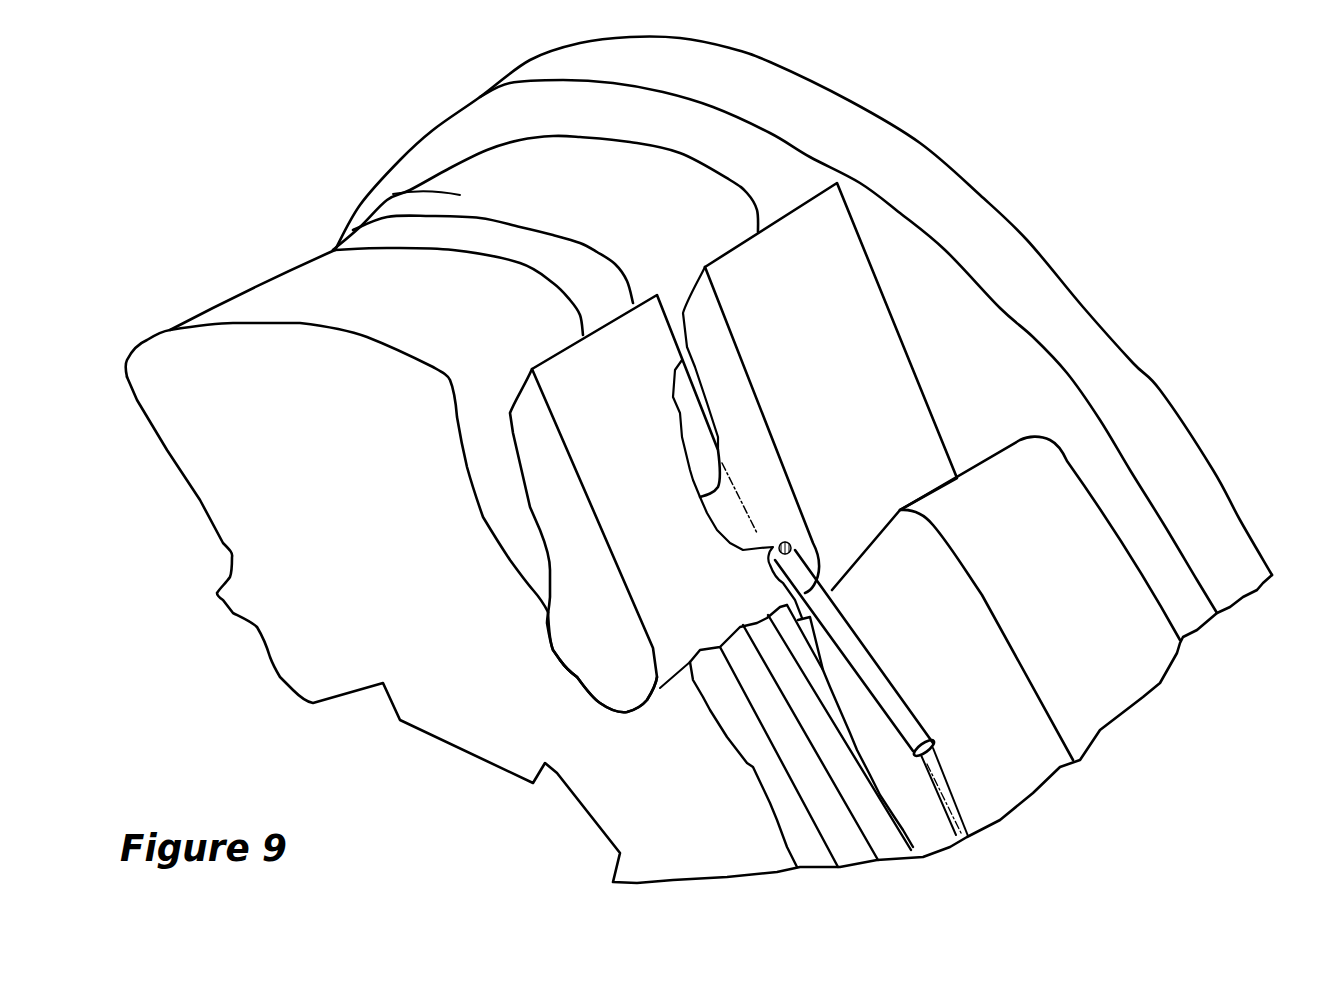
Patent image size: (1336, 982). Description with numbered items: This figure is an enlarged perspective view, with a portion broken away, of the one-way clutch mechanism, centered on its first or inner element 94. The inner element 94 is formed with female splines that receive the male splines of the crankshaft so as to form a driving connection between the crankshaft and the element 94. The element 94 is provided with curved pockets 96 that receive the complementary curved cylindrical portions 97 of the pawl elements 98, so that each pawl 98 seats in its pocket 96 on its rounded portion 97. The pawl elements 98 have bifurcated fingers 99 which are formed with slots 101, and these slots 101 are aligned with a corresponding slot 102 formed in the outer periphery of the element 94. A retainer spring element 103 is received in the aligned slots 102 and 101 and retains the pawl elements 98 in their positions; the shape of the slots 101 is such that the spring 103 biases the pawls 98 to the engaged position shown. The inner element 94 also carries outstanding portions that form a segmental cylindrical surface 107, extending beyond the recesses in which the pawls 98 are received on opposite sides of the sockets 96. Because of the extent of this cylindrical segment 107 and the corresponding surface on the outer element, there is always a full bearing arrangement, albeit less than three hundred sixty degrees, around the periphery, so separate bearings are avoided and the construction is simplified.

The first or inner element 94 is at (300, 673).
The curved pockets 96 is at (580, 680).
The curved cylindrical portions 97 is at (615, 697).
The pawl elements 98 is at (567, 537).
The bifurcated fingers 99 is at (638, 332).
The slots 101 is at (752, 443).
The slot 102 is at (933, 823).
The retainer spring element 103 is at (872, 663).
The segmental cylindrical surface 107 is at (410, 307).